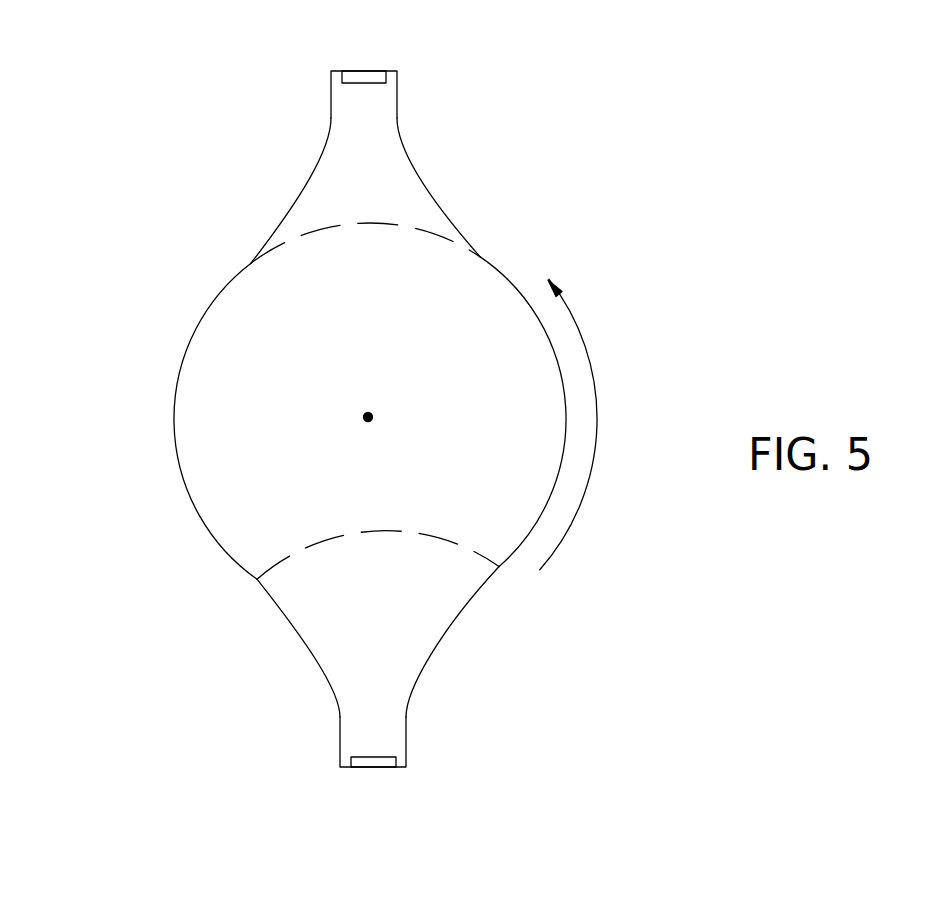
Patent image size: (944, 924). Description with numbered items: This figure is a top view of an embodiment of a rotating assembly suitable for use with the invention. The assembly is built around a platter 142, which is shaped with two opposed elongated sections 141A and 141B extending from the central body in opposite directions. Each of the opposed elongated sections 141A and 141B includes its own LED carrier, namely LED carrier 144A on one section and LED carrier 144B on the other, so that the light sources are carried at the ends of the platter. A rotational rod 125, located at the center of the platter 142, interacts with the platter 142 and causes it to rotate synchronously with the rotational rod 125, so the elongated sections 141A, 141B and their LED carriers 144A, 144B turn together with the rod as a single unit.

The rotational rod 125 is at (366, 416).
The opposed elongated section 141A is at (390, 700).
The opposed elongated section 141B is at (390, 173).
The platter 142 is at (485, 557).
The LED carrier 144A is at (417, 757).
The LED carrier 144B is at (413, 70).